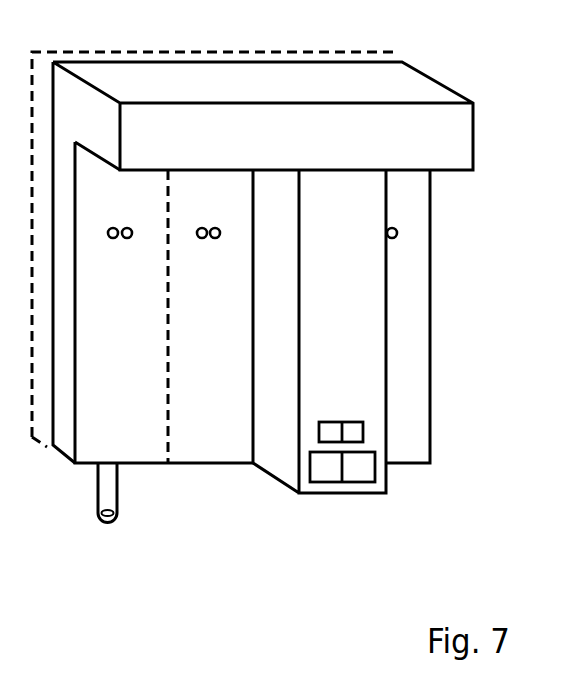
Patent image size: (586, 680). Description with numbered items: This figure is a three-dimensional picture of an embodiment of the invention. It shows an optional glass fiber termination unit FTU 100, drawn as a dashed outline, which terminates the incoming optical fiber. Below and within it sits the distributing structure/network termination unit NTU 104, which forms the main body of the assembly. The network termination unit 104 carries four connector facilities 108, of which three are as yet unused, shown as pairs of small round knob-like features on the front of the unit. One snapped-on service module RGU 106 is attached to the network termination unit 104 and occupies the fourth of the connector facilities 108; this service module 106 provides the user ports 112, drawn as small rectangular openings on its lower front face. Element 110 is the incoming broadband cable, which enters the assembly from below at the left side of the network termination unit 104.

The glass fiber termination unit 100 is at (360, 47).
The distributing structure/network termination unit 104 is at (202, 468).
The snapped-on service module 106 is at (335, 495).
The connector facilities 108 is at (132, 250).
The incoming broadband cable 110 is at (93, 500).
The user ports 112 is at (363, 432).